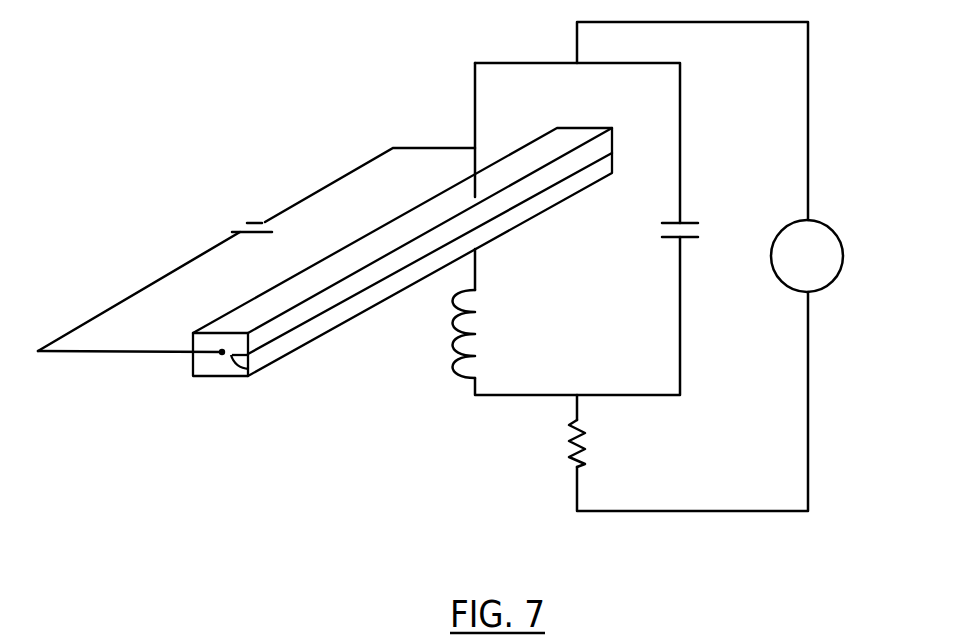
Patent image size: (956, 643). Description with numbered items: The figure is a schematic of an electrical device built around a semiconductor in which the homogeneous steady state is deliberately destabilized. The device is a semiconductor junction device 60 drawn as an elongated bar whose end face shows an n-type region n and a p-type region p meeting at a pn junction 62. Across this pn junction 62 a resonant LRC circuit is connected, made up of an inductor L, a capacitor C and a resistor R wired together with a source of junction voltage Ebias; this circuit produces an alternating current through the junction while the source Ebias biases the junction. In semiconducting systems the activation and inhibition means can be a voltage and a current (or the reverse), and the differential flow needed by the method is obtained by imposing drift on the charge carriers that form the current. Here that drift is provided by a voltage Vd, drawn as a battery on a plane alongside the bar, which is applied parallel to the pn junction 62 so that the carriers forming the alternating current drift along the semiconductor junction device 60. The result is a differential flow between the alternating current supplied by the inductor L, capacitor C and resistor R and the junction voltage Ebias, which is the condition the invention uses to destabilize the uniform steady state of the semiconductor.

The semiconductor junction device 60 is at (396, 212).
The pn junction 62 is at (248, 376).
The voltage Vd is at (256, 250).
The inductor L is at (476, 334).
The capacitor C is at (665, 230).
The resistor R is at (587, 443).
The junction voltage Ebias is at (807, 256).
The n-type region n is at (208, 340).
The p-type region p is at (207, 354).